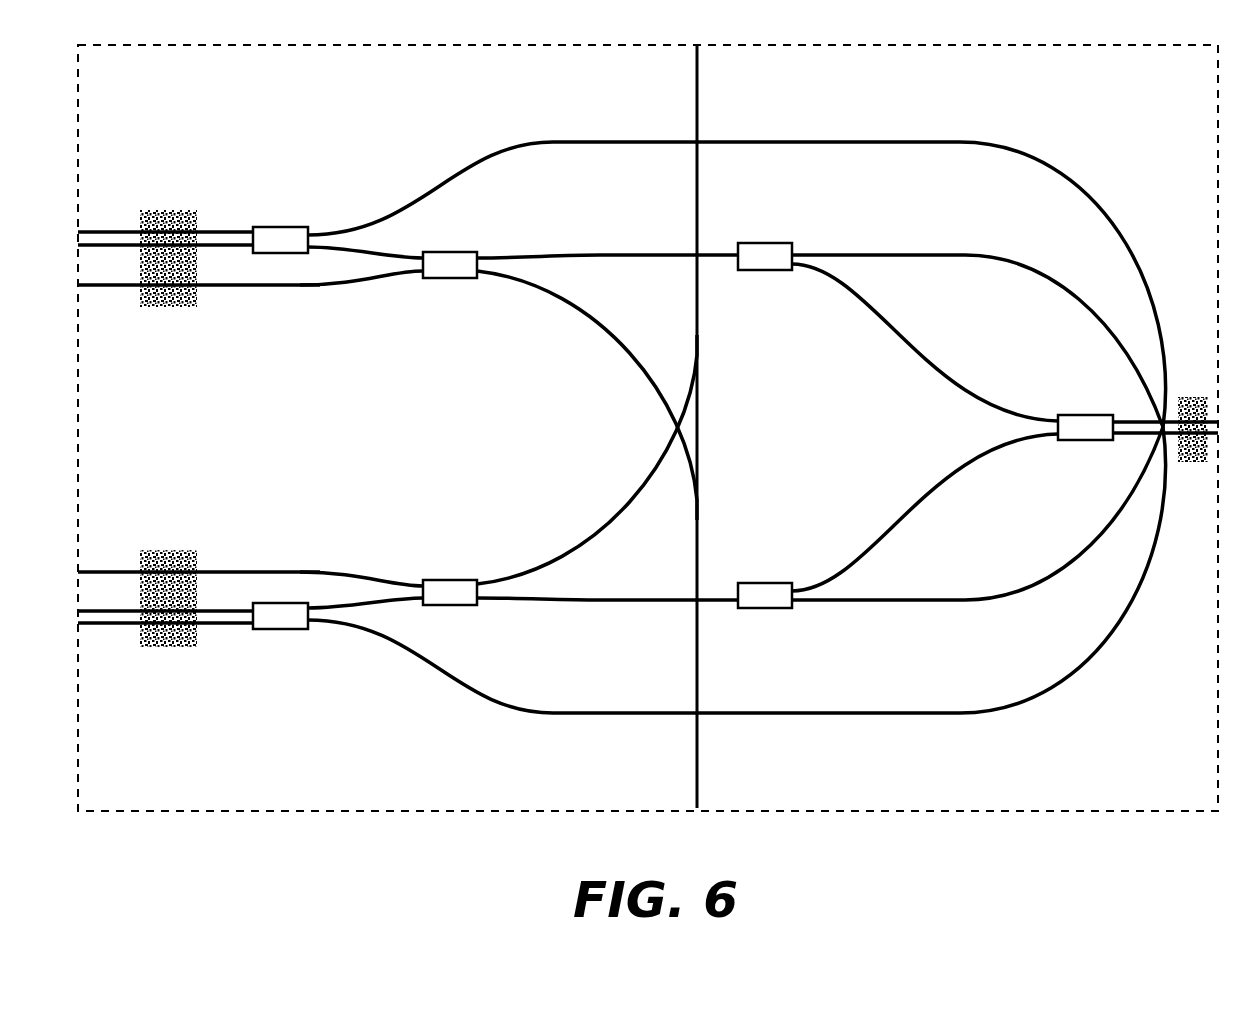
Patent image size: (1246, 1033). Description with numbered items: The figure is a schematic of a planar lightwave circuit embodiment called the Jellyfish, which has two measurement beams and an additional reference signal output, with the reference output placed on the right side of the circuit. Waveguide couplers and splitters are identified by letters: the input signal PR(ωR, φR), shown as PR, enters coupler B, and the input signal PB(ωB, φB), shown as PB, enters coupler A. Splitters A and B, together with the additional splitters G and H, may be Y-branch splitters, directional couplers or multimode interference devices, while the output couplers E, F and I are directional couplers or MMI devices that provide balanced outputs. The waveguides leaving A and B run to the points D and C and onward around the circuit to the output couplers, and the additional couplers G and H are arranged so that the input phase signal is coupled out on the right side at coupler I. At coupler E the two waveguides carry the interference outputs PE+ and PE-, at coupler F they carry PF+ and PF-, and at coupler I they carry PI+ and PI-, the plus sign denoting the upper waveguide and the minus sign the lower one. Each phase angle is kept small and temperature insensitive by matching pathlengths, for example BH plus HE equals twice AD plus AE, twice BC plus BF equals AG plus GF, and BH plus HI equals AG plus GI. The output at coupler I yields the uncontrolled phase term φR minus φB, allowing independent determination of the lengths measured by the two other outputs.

The coupler A is at (450, 282).
The coupler B is at (450, 577).
The point C is at (712, 231).
The point D is at (713, 628).
The output coupler E is at (280, 225).
The output coupler F is at (280, 632).
The coupler G is at (898, 317).
The coupler H is at (898, 521).
The output coupler I is at (1085, 411).
The optical power PE- is at (219, 241).
The optical power PF- is at (217, 631).
The input optical signal PB(ωB, φB) PB is at (412, 282).
The input optical signal PR(ωR, φR) PR is at (408, 580).
The optical power PI- is at (1127, 441).